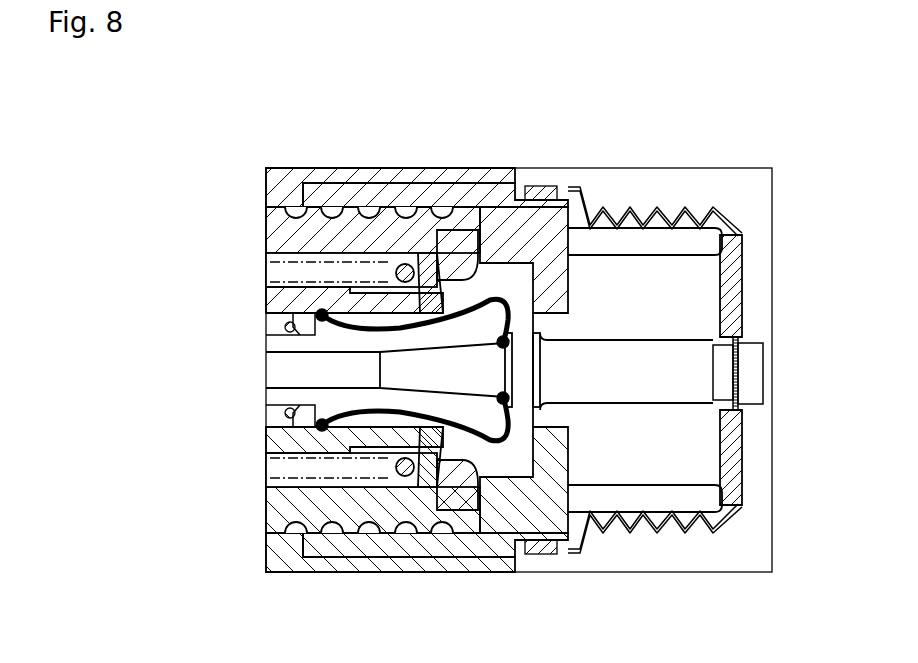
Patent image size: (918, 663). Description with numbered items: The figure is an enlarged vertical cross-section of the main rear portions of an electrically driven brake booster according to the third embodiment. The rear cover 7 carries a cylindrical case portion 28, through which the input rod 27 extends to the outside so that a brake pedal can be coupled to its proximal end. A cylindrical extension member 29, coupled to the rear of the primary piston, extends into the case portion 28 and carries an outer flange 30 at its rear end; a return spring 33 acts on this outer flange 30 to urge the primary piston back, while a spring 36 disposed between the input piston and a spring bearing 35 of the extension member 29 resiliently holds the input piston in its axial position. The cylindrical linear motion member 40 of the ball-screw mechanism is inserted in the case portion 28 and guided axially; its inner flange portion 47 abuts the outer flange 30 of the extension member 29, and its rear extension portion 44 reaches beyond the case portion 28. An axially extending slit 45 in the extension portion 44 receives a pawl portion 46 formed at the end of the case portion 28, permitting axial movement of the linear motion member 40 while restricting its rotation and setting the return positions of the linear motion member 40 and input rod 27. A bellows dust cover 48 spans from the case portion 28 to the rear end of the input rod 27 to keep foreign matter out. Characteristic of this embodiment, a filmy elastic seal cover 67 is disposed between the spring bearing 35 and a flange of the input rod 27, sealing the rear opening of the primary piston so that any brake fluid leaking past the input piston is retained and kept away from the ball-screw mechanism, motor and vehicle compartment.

The rear cover 7 is at (297, 172).
The input rod 27 is at (667, 352).
The case portion 28 is at (438, 193).
The extension member 29 is at (373, 297).
The outer flange 30 is at (425, 480).
The return spring 33 is at (399, 477).
The spring bearing 35 is at (352, 430).
The spring 36 is at (287, 412).
The linear motion member 40 is at (322, 222).
The extension portion 44 is at (697, 522).
The slit 45 is at (632, 238).
The pawl portion 46 is at (560, 293).
The inner flange portion 47 is at (452, 470).
The bellows dust cover 48 is at (733, 437).
The seal cover 67 is at (537, 554).